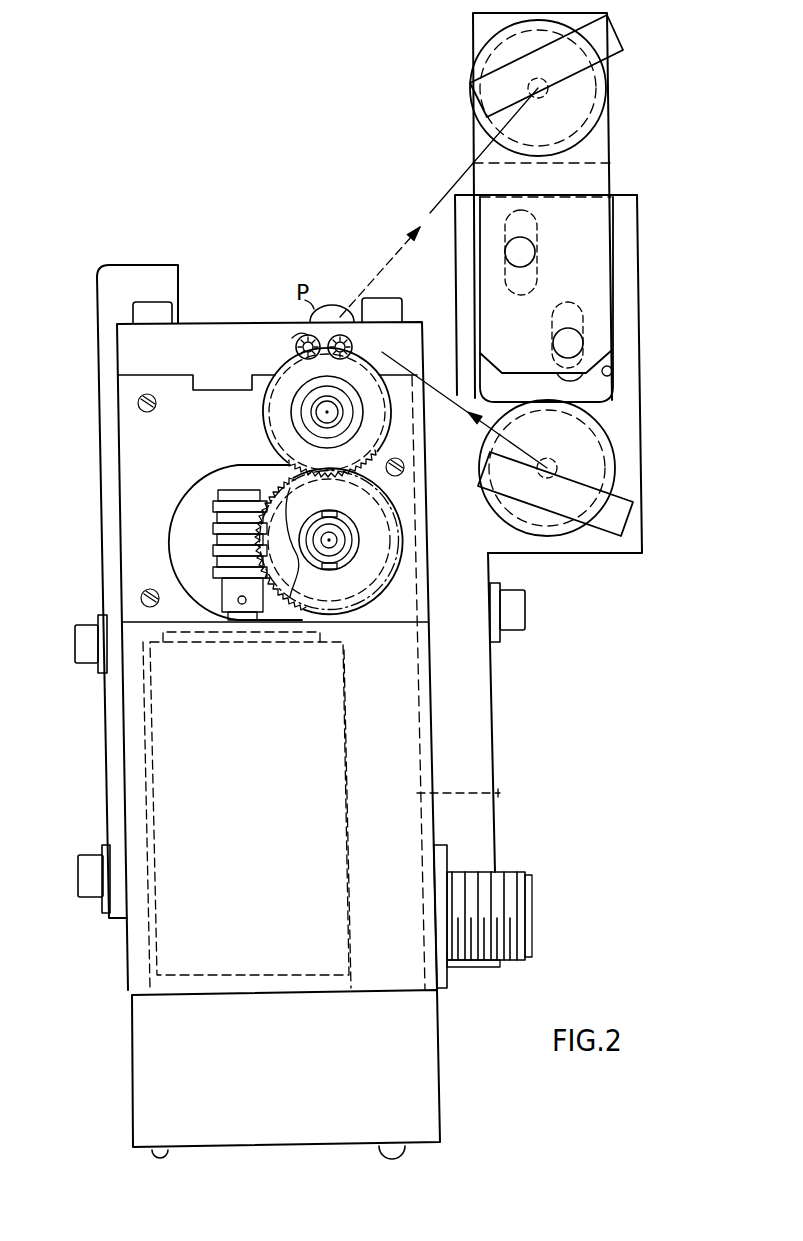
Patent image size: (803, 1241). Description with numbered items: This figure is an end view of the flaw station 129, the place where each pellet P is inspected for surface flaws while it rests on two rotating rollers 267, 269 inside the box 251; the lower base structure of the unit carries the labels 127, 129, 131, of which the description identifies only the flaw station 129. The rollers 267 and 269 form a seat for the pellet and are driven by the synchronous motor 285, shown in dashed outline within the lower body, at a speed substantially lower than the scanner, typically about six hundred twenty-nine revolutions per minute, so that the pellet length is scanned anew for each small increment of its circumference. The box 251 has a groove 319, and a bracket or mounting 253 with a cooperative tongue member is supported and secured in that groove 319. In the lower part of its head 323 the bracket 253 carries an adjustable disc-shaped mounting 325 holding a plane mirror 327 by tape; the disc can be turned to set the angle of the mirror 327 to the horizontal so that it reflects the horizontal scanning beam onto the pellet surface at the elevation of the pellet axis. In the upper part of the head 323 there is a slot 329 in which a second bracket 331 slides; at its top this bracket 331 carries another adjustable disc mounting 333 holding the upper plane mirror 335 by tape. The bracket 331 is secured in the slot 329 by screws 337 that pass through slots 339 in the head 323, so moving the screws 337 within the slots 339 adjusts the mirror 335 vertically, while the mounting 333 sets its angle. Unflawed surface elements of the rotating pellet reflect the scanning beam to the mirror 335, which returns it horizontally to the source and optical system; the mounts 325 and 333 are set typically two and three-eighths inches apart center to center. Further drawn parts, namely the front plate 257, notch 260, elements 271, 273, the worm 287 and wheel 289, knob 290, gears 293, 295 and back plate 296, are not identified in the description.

The base housing 127 is at (343, 1074).
The flaw station 129 is at (343, 1074).
The base housing 131 is at (440, 1118).
The box 251 is at (588, 758).
The bracket or mounting 253 is at (510, 670).
The front plate 257 is at (122, 347).
The notch 260 is at (202, 383).
The rotating roller 267 is at (302, 337).
The rotating roller 269 is at (352, 346).
The pressure roller 271 is at (296, 347).
The paper guide 273 is at (345, 334).
The synchronous motor 285 is at (150, 768).
The worm 287 is at (217, 540).
The worm wheel 289 is at (275, 498).
The knob 290 is at (512, 873).
The drive gear 293 is at (350, 593).
The roller gear 295 is at (280, 417).
The back plate 296 is at (94, 556).
The groove 319 is at (473, 790).
The head 323 is at (613, 545).
The adjustable mounting 325 is at (590, 436).
The plane mirror 327 is at (622, 508).
The slot 329 is at (612, 372).
The bracket 331 is at (610, 178).
The adjustable mounting 333 is at (588, 96).
The plane mirror 335 is at (613, 42).
The screw 337 is at (531, 250).
The slot 339 is at (529, 283).